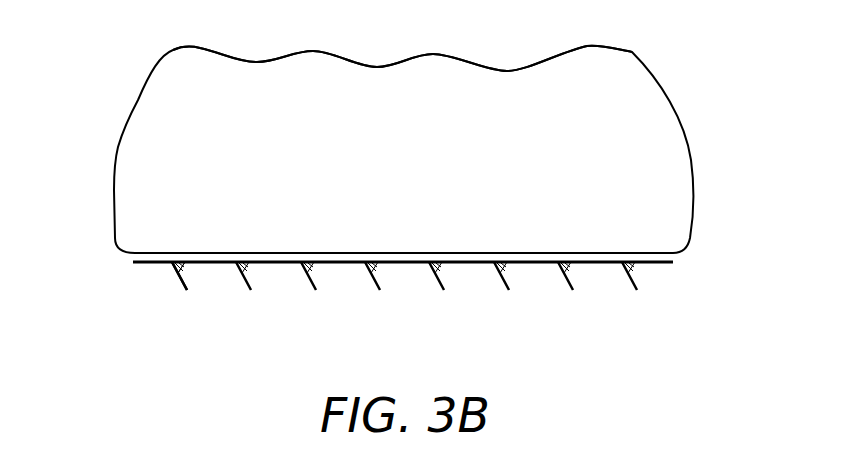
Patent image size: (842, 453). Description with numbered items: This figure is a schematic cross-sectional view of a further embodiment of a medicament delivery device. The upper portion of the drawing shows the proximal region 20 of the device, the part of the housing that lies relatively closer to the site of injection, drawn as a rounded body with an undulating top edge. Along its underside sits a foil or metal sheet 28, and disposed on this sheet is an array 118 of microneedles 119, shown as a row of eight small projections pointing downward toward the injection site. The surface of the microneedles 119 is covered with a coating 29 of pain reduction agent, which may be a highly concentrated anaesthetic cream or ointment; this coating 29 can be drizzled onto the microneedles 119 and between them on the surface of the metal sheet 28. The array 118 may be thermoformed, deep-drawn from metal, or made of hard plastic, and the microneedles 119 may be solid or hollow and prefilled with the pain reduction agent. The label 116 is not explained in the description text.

The proximal region 20 is at (688, 143).
The foil or metal sheet 28 is at (661, 264).
The coating of pain reduction agent 29 is at (186, 265).
The upper surface 116 is at (115, 68).
The array of microneedles 118 is at (445, 303).
The microneedles 119 is at (187, 289).